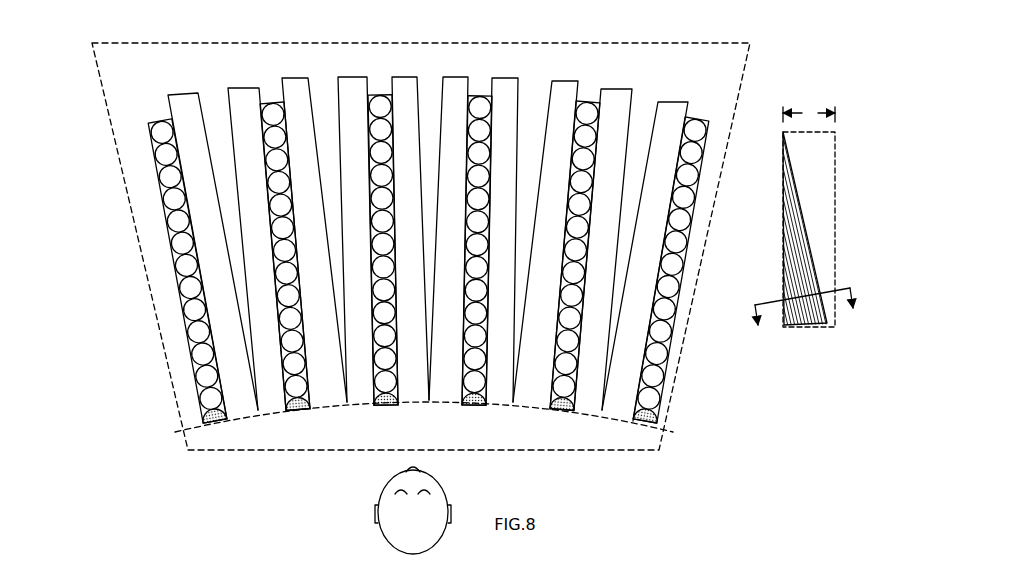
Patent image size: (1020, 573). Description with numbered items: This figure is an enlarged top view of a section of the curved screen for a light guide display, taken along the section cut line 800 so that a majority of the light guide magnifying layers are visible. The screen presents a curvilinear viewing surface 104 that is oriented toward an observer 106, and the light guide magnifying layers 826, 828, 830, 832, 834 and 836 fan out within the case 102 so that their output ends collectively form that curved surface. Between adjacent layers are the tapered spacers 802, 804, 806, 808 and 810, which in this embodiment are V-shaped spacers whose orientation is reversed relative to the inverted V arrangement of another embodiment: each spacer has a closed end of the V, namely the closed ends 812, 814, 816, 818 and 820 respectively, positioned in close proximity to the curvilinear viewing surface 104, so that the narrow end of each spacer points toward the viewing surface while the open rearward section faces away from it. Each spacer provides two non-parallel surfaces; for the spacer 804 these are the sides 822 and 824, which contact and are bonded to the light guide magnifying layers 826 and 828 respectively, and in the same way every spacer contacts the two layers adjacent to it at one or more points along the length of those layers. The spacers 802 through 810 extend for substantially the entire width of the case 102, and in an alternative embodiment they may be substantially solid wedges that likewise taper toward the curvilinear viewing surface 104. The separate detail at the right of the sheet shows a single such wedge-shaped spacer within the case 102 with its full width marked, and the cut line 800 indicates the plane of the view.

The case 102 is at (828, 207).
The curvilinear viewing surface 104 is at (620, 422).
The observer 106 is at (398, 529).
The line 800 is at (773, 298).
The spacer 802 is at (180, 107).
The spacer 804 is at (292, 90).
The spacer 806 is at (402, 85).
The spacer 808 is at (503, 95).
The spacer 810 is at (615, 105).
The closed end 812 is at (250, 412).
The closed end 814 is at (340, 405).
The closed end 816 is at (427, 400).
The closed end 818 is at (513, 403).
The closed end 820 is at (602, 410).
The side 822 is at (280, 237).
The side 824 is at (373, 82).
The light guide magnifying layer 826 is at (272, 195).
The light guide magnifying layer 828 is at (375, 303).
The light guide magnifying layer 830 is at (207, 400).
The light guide magnifying layer 832 is at (478, 100).
The light guide magnifying layer 834 is at (588, 157).
The light guide magnifying layer 836 is at (700, 125).